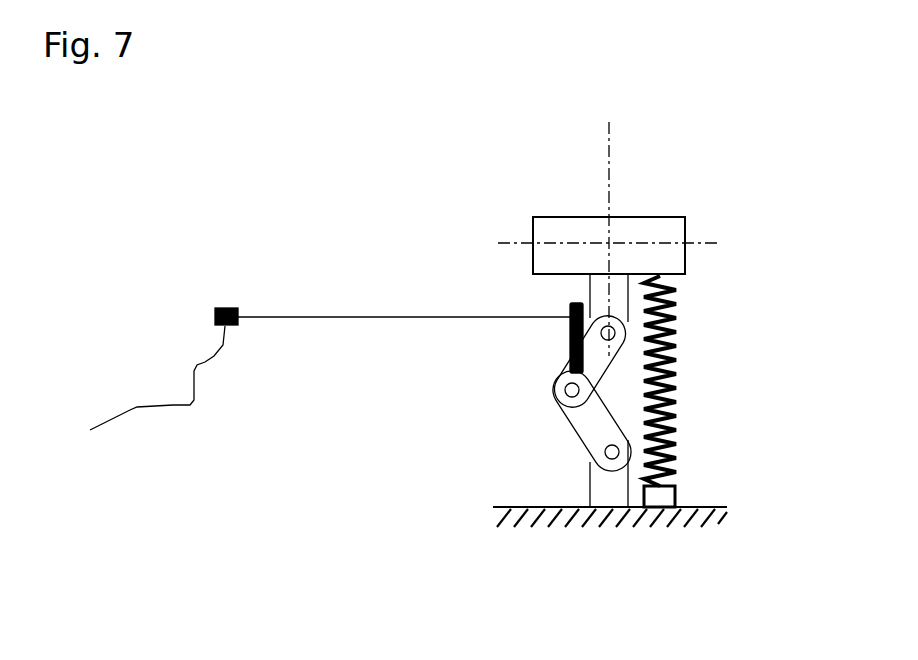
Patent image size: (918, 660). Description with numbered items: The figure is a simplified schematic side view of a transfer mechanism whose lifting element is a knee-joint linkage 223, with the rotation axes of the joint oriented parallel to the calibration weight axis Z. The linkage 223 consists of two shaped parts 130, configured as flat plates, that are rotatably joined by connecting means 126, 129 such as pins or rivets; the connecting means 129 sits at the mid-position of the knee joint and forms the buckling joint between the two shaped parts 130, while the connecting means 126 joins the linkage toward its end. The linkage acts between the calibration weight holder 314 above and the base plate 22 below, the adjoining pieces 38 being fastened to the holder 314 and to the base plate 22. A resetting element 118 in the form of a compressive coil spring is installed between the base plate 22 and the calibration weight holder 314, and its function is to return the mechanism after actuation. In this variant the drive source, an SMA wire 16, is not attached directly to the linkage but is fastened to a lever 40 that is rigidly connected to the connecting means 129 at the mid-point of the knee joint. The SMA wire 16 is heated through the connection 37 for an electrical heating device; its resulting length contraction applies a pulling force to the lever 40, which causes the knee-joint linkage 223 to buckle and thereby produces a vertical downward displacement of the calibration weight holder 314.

The calibration weight axis Z is at (628, 229).
The calibration weight holder 314 is at (552, 227).
The knee-joint linkage 223 is at (490, 284).
The adjoining piece 38 is at (612, 488).
The base plate 22 is at (700, 528).
The resetting element 118 is at (670, 382).
The shaped part 130 is at (598, 358).
The connecting means 126 is at (614, 327).
The connecting means 129 is at (566, 396).
The lever 40 is at (571, 343).
The SMA wire 16 is at (310, 317).
The connection for an electrical heating device 37 is at (173, 403).